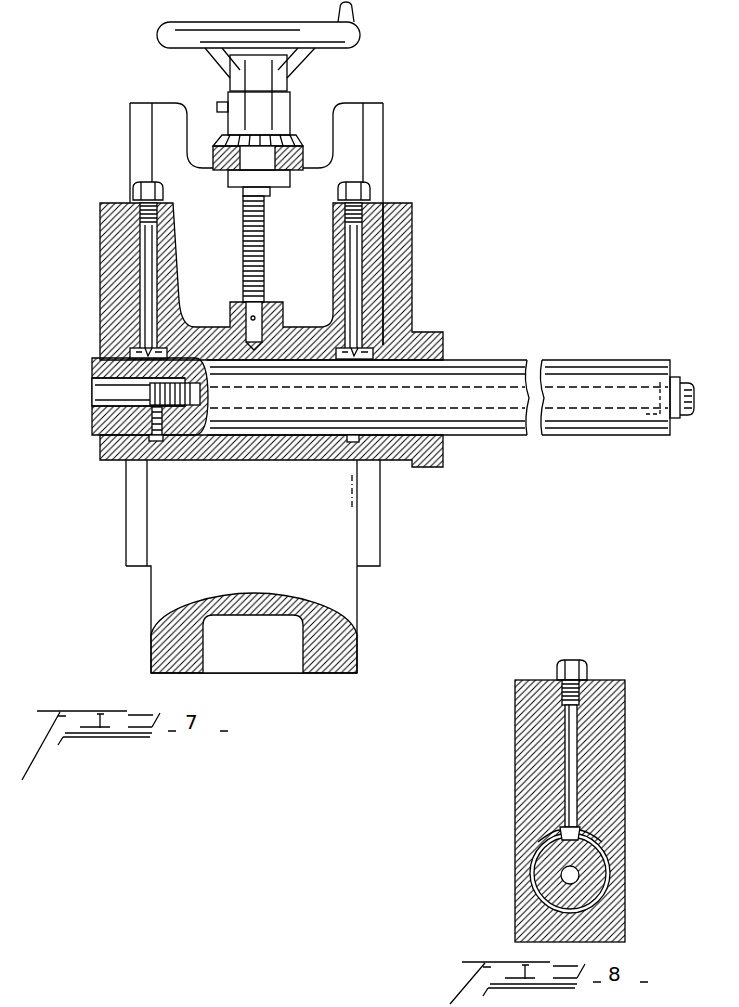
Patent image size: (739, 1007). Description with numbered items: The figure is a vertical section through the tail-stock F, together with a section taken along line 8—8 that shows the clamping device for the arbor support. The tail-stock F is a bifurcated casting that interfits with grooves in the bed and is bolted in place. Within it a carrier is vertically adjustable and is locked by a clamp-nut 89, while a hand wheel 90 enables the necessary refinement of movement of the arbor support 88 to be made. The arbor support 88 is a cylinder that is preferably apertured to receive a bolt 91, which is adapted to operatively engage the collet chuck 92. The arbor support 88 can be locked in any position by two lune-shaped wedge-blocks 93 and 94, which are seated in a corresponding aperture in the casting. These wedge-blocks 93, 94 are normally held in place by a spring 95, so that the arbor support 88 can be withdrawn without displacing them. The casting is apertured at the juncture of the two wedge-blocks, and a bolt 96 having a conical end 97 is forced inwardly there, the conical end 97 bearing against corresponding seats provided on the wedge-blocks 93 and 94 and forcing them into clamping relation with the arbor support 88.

In FIG. 7, the section line 8— 8 is at (353, 182).
In FIG. 7, the arbor support 88 is at (612, 363).
In FIG. 7, the clamp-nut 89 is at (428, 338).
In FIG. 8, the clamp-nut 89 is at (570, 811).
In FIG. 7, the hand wheel 90 is at (283, 32).
In FIG. 7, the bolt 91 is at (690, 386).
In FIG. 7, the collet chuck 92 is at (100, 406).
In FIG. 8, the wedge-block 93 is at (548, 836).
In FIG. 7, the wedge-block 94 is at (138, 356).
In FIG. 8, the wedge-block 94 is at (590, 838).
In FIG. 7, the spring 95 is at (157, 442).
In FIG. 8, the spring 95 is at (608, 872).
In FIG. 7, the bolt 96 is at (163, 194).
In FIG. 8, the bolt 96 is at (588, 670).
In FIG. 7, the conical end 97 is at (146, 348).
In FIG. 8, the conical end 97 is at (579, 815).
In FIG. 7, the tail-stock F is at (254, 388).